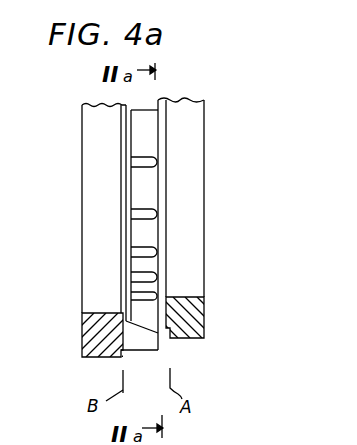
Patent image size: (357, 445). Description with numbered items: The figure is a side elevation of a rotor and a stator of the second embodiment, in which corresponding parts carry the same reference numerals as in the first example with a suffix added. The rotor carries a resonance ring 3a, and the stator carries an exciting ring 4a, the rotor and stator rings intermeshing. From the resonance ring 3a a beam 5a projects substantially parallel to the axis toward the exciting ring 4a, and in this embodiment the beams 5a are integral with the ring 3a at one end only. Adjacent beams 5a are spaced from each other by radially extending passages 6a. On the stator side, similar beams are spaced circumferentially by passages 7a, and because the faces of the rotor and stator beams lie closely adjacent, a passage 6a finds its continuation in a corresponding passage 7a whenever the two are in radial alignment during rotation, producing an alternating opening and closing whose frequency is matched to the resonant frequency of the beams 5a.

The resonance ring 3a is at (193, 328).
The exciting ring 4a is at (92, 340).
The beam 5a is at (140, 235).
The passage 6a is at (140, 213).
The passage 7a is at (147, 340).